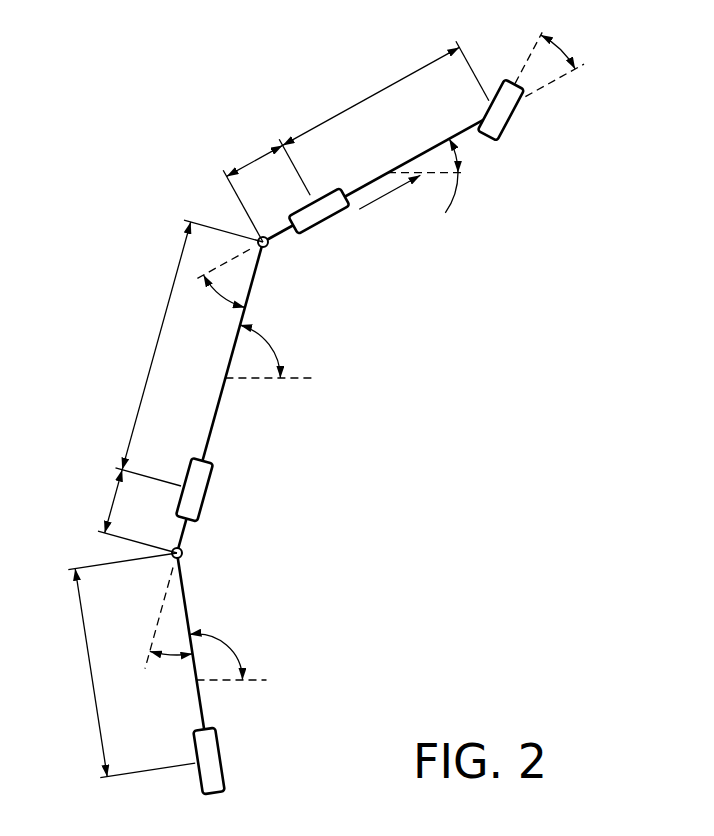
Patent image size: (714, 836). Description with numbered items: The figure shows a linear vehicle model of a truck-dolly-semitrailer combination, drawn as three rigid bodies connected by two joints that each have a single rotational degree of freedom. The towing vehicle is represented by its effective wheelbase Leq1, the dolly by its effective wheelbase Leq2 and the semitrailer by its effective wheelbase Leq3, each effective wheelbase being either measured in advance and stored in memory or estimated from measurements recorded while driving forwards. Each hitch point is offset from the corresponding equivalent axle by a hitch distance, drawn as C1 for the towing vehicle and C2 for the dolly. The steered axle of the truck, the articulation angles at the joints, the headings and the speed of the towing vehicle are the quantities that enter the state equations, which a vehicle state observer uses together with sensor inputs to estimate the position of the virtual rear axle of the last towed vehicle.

The effective wheelbase of the towing vehicle Leq1 is at (356, 141).
The hitch offset of the first vehicle C1 is at (266, 158).
The effective wheelbase of the first towed vehicle Leq2 is at (175, 353).
The hitch offset of the second vehicle C2 is at (121, 510).
The effective wheelbase of the last towed vehicle Leq3 is at (114, 665).